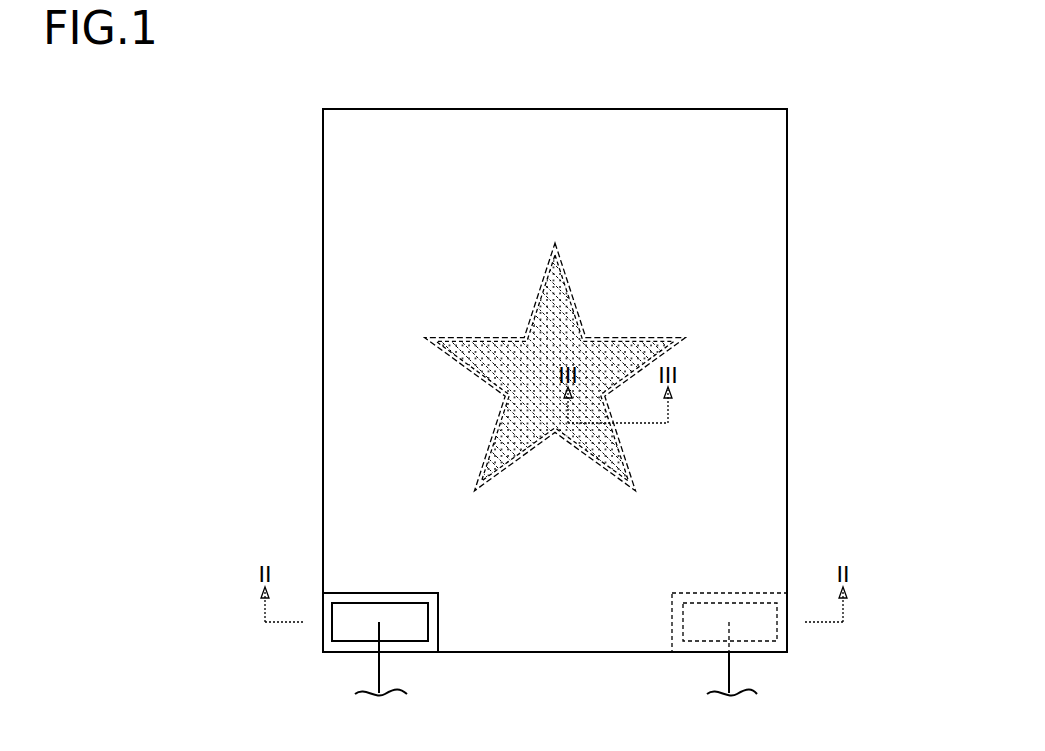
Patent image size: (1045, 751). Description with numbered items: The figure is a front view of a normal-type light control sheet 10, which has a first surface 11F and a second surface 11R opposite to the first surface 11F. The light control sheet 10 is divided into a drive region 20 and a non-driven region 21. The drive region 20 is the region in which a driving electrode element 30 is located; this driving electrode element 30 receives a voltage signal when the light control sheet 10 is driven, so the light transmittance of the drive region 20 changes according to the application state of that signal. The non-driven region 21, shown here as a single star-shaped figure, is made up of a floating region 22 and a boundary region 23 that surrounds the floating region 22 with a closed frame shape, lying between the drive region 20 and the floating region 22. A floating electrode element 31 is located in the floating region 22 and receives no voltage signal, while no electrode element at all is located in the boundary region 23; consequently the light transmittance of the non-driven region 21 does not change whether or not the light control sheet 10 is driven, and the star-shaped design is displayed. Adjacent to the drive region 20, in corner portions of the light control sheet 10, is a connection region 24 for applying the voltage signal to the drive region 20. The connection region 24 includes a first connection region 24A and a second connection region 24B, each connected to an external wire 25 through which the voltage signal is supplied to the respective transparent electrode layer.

The light control sheet 10 is at (787, 150).
The first surface 11F is at (750, 203).
The second surface 11R is at (787, 275).
The drive region 20 is at (348, 213).
The driving electrode element 30 is at (345, 365).
The floating electrode element 31 is at (551, 412).
The non-driven region 21 is at (555, 412).
The floating region 22 is at (535, 448).
The boundary region 23 is at (500, 473).
The connection region 24 is at (558, 635).
The first connection region 24A is at (787, 653).
The second connection region 24B is at (323, 652).
The external wire 25 is at (379, 670).